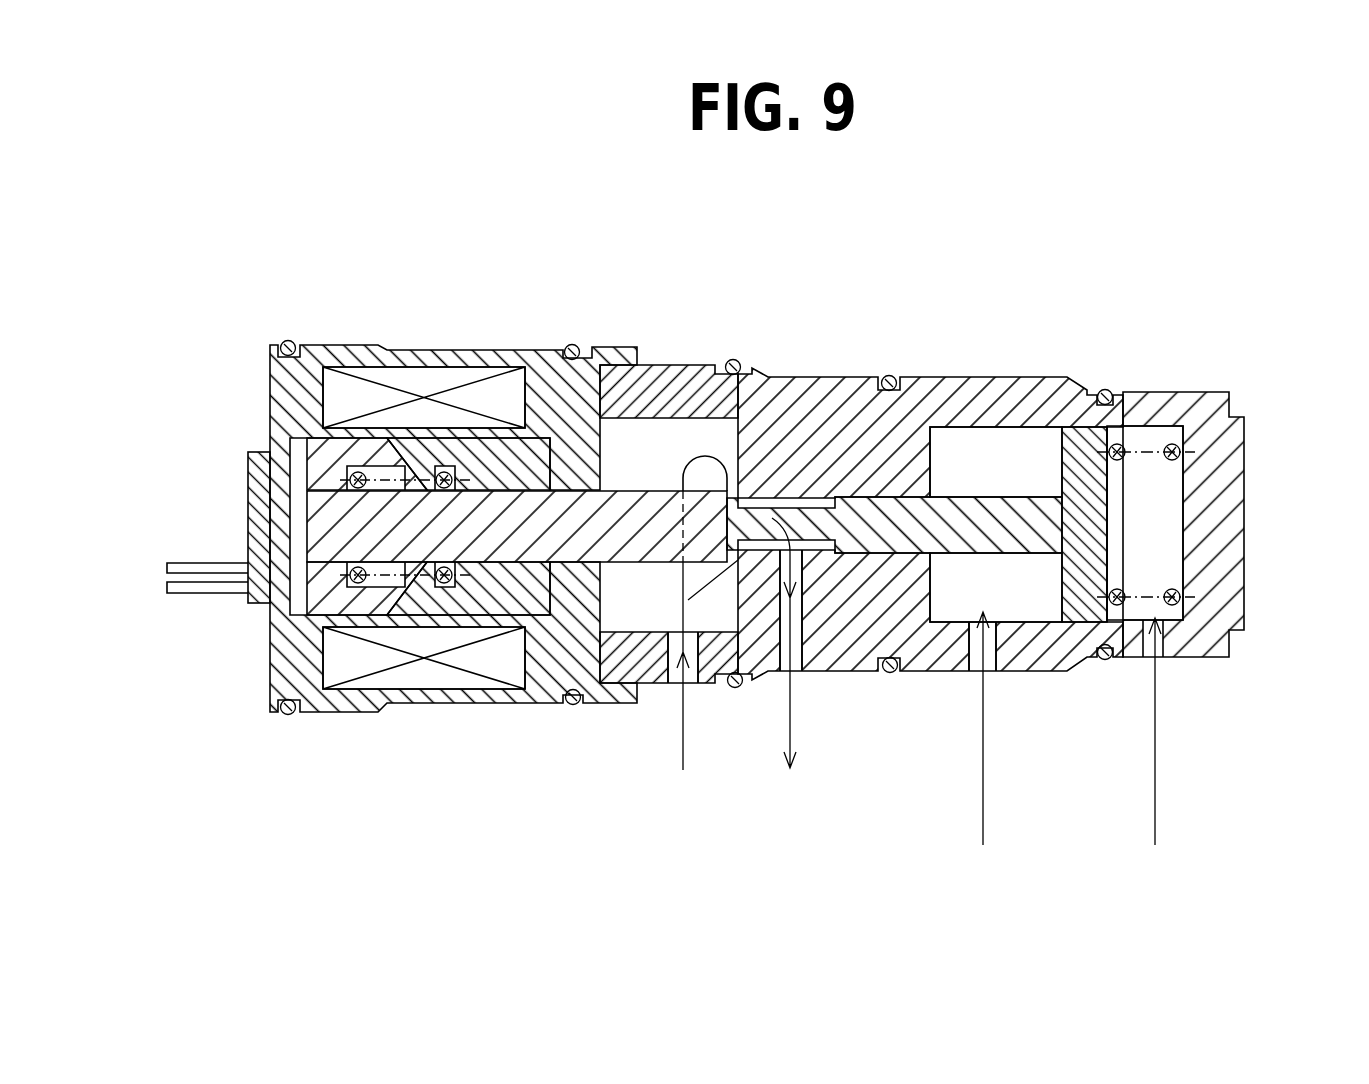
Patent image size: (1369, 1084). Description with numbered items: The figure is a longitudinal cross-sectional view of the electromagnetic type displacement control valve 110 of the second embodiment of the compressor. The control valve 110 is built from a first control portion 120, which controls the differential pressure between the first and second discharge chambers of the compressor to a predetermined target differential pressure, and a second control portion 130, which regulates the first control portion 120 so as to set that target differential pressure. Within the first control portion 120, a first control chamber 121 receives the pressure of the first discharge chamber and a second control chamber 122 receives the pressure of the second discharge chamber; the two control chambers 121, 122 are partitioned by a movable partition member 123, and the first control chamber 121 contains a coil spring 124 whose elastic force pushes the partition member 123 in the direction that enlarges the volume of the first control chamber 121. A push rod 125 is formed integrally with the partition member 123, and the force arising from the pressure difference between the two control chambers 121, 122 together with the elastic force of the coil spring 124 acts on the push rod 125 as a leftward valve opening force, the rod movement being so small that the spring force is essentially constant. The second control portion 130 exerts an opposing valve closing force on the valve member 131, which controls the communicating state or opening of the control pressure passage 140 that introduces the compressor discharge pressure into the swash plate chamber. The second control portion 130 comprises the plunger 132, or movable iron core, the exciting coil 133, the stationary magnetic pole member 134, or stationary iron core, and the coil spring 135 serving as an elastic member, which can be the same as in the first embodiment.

The electromagnetic type displacement control valve 110 is at (759, 350).
The first control portion 120 is at (955, 360).
The first control chamber 121 is at (1150, 513).
The second control chamber 122 is at (1030, 604).
The movable partition member 123 is at (1083, 450).
The coil spring 124 is at (1174, 445).
The push rod 125 is at (1015, 522).
The second control portion 130 is at (531, 341).
The valve member 131 is at (660, 489).
The plunger 132 is at (323, 455).
The exciting coil 133 is at (447, 378).
The stationary magnetic pole member 134 is at (535, 607).
The coil spring 135 is at (362, 472).
The control pressure passage 140 is at (677, 657).